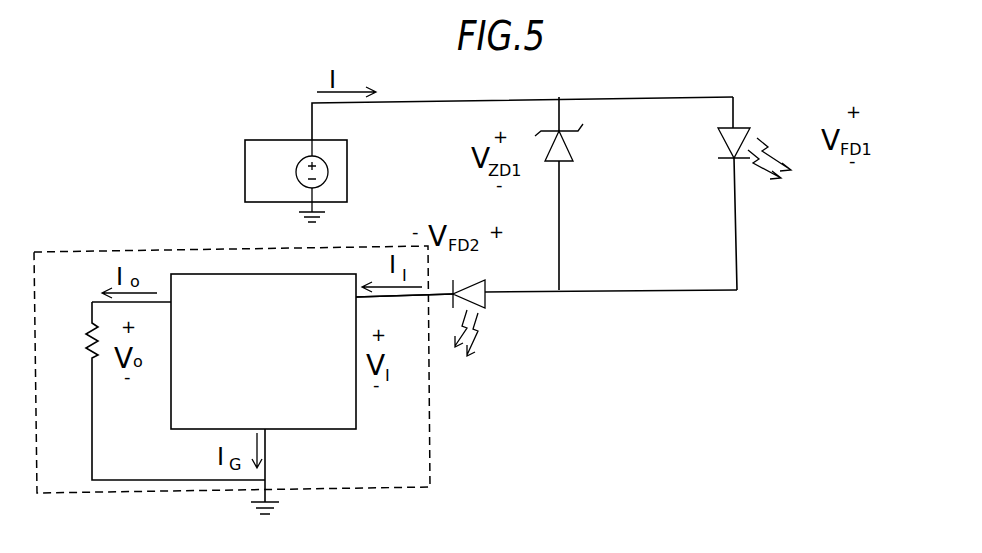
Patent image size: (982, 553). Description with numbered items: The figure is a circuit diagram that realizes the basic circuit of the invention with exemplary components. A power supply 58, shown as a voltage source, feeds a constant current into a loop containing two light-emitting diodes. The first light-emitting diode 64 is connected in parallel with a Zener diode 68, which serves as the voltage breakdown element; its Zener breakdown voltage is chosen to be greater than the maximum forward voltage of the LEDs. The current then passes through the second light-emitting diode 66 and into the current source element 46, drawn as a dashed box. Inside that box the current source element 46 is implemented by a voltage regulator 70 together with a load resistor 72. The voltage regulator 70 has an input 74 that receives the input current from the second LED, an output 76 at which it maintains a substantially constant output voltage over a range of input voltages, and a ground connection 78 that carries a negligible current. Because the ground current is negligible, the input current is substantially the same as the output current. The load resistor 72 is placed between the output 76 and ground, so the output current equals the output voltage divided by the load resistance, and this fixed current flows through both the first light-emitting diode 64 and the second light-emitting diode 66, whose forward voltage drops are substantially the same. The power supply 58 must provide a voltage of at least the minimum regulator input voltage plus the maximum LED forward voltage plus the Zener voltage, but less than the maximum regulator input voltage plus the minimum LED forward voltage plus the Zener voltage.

The power supply 58 is at (245, 163).
The light-emitting diode 64 is at (738, 125).
The Zener diode 68 is at (562, 162).
The light-emitting diode 66 is at (487, 304).
The input 74 is at (357, 298).
The current source element 46 is at (430, 410).
The voltage regulator 70 is at (357, 403).
The ground connection 78 is at (266, 431).
The output 76 is at (168, 301).
The load resistor 72 is at (90, 332).